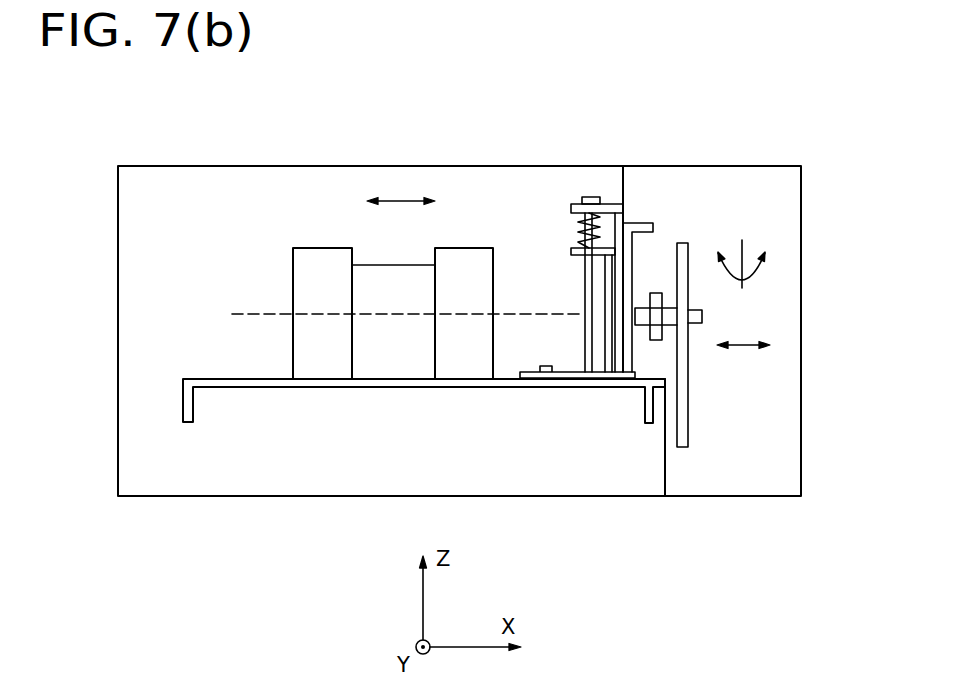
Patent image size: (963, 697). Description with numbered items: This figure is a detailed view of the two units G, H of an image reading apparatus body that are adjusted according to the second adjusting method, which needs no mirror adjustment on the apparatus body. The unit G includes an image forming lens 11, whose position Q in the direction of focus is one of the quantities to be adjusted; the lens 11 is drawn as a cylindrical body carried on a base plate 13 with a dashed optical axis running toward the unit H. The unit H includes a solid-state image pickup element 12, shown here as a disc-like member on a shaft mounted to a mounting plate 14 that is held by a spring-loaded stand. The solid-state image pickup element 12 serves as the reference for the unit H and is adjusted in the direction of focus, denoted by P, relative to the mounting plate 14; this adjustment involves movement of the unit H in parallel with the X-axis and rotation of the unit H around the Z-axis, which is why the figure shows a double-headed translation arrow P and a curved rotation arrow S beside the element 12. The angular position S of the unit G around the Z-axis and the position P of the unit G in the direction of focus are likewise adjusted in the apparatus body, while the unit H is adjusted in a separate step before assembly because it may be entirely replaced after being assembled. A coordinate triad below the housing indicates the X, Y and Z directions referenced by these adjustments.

The image forming lens 11 is at (293, 270).
The solid-state image pickup element 12 is at (657, 293).
The base plate 13 is at (320, 387).
The mounting plate 14 is at (627, 372).
The unit G is at (298, 166).
The unit H is at (658, 166).
The position of the image forming lens in the direction of focus Q is at (407, 200).
The angular position of the unit G around Z-axis S is at (757, 277).
The position in the direction of focus P is at (743, 347).